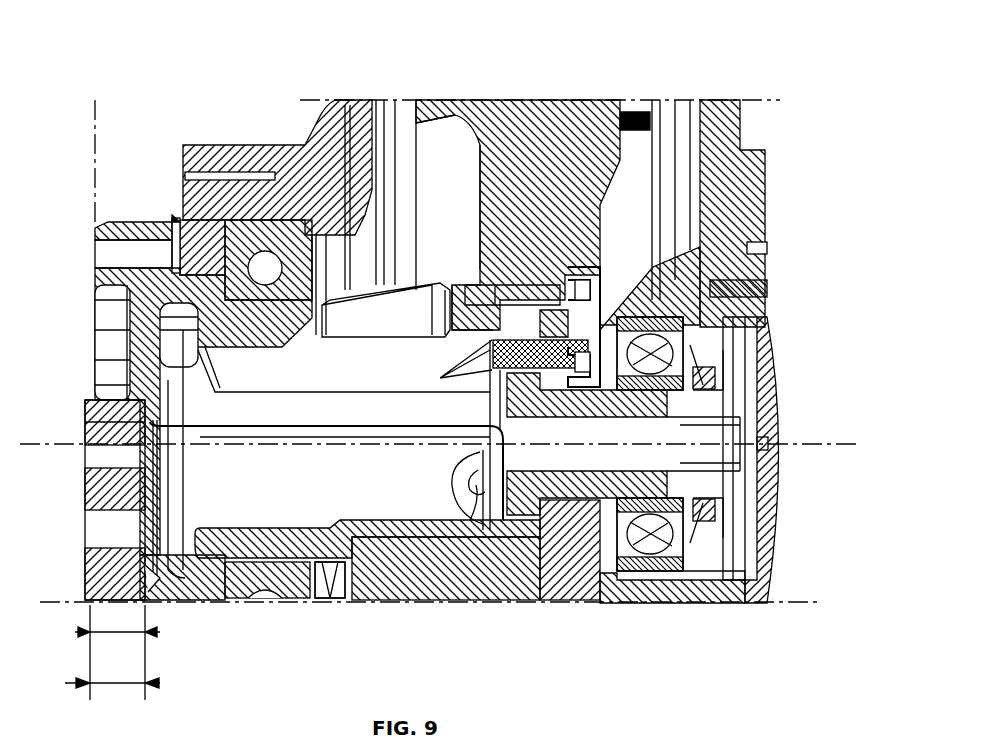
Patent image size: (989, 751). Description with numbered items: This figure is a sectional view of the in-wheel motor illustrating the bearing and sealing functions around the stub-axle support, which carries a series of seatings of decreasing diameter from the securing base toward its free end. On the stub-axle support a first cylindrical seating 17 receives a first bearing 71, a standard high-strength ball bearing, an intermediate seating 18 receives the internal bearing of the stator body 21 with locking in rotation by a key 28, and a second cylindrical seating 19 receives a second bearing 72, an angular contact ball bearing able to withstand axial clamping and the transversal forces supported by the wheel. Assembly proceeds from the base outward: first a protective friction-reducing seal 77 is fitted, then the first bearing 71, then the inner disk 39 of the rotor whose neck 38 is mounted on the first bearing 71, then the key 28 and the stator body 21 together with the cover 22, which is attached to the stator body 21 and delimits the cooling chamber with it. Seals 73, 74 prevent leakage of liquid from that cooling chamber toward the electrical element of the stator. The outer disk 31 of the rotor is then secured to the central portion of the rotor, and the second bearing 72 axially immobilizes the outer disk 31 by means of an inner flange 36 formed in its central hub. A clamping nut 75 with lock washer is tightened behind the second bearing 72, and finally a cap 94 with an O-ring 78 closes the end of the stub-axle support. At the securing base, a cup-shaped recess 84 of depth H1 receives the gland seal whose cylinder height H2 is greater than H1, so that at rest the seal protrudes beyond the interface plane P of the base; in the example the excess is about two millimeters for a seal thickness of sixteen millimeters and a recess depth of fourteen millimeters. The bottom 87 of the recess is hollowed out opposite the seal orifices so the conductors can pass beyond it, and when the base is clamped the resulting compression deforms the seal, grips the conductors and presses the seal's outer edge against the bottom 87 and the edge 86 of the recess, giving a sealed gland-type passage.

The first cylindrical seating 17 is at (268, 535).
The intermediate seating 18 is at (336, 565).
The second cylindrical seating 19 is at (655, 500).
The stator body 21 is at (550, 108).
The cover 22 is at (565, 578).
The key 28 is at (480, 560).
The outer disk 31 is at (745, 195).
The inner flange 36 is at (622, 582).
The neck 38 is at (292, 165).
The inner disk 39 is at (365, 110).
The first bearing 71 is at (278, 578).
The second bearing 72 is at (655, 318).
The seal 73 is at (632, 118).
The seal 74 is at (535, 255).
The clamping nut 75 is at (716, 380).
The protective friction-reducing seal 77 is at (200, 245).
The O-ring 78 is at (742, 310).
The cup-shaped recess 84 is at (152, 578).
The edge of the recess 86 is at (86, 402).
The bottom of the receiving recess 87 is at (85, 418).
The cap 94 is at (772, 520).
The interface plane P is at (93, 126).
The recess depth H1 is at (117, 652).
The seal thickness H2 is at (112, 693).